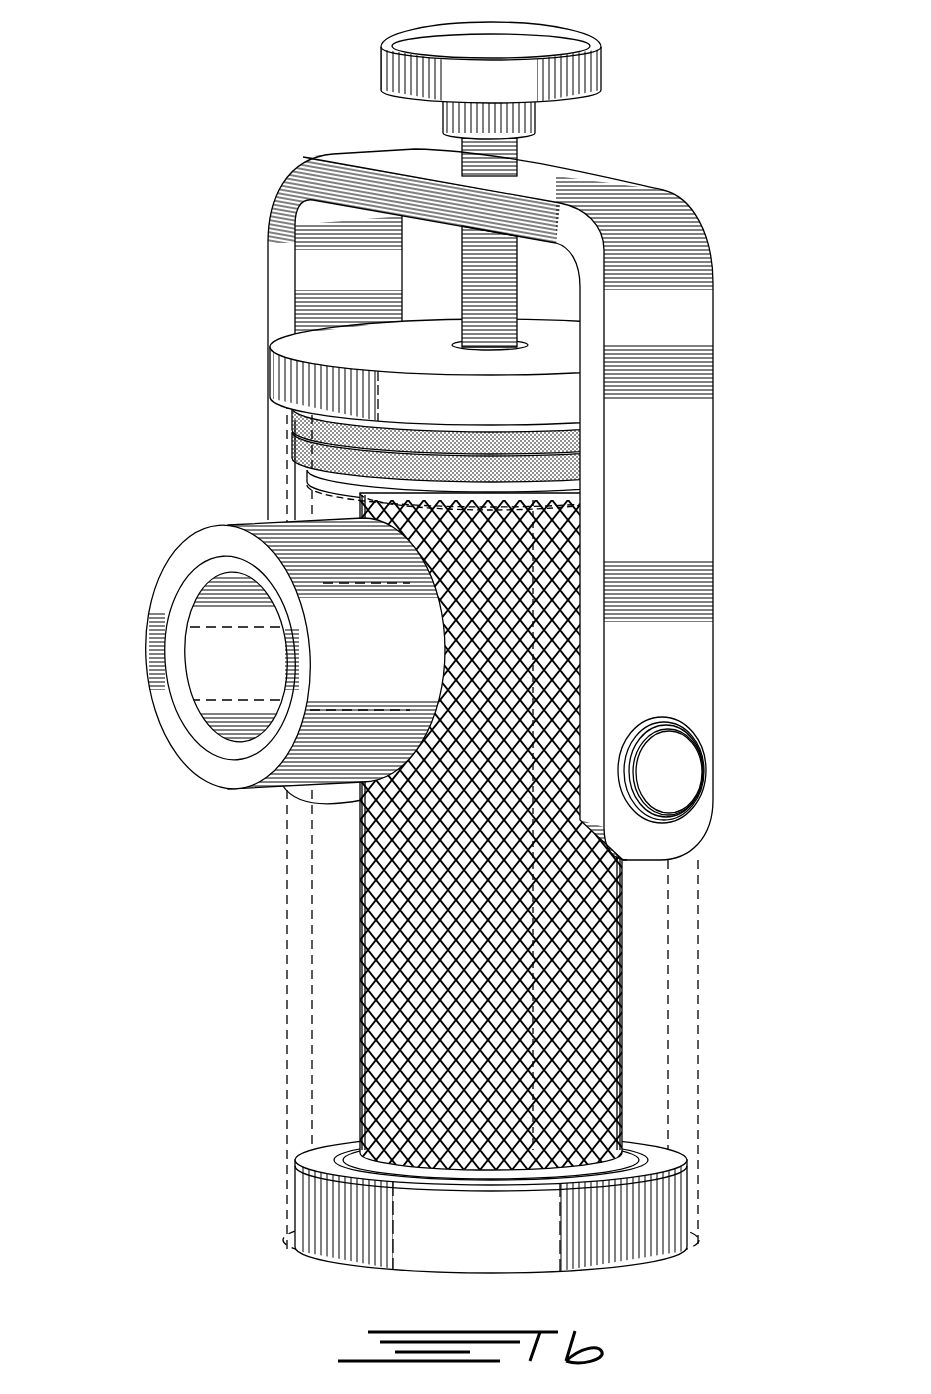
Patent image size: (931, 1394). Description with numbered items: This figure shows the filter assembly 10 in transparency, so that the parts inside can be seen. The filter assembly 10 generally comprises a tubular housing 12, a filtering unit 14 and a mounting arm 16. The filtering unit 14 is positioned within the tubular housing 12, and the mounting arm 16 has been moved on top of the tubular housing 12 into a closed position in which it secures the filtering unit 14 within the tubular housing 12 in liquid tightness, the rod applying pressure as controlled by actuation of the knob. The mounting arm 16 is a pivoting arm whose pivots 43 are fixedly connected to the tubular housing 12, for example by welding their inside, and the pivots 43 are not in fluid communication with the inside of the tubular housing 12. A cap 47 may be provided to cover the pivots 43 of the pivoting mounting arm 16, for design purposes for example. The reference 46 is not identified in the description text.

The filter assembly 10 is at (628, 975).
The housing 12 is at (286, 966).
The filtering unit 14 is at (160, 431).
The mounting arm 16 is at (666, 192).
The pivots 43 is at (665, 724).
The threaded adjustment screw 46 is at (473, 160).
The cap 47 is at (670, 787).